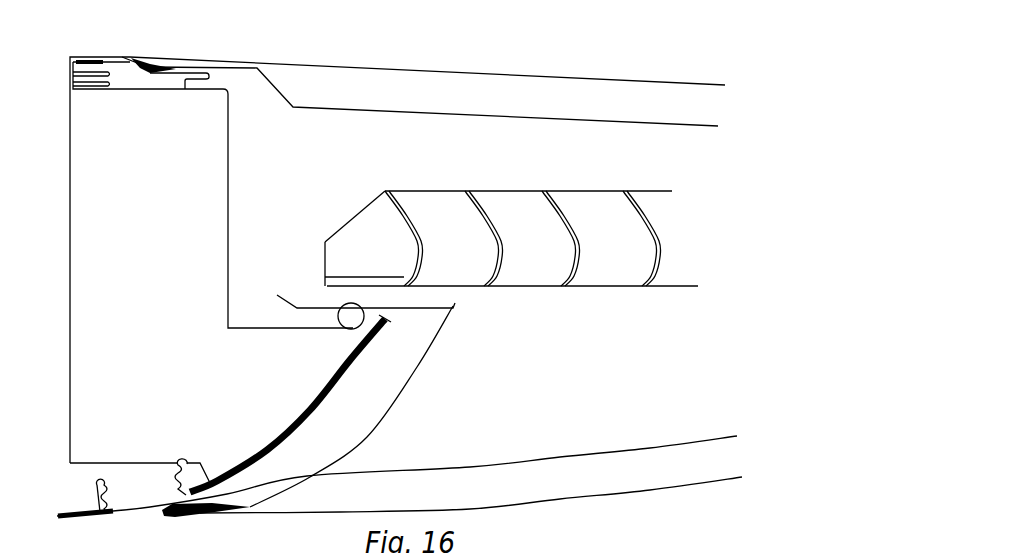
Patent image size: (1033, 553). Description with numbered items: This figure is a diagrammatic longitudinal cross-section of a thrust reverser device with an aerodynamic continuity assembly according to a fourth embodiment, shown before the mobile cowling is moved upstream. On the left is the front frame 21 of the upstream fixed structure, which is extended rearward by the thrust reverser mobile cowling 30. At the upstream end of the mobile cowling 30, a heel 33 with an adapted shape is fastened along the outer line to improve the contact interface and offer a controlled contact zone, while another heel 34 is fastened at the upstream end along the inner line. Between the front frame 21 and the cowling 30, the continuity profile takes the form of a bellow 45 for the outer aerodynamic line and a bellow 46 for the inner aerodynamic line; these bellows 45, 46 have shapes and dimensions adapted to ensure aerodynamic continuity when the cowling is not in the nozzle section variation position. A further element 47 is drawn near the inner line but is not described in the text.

The front frame 21 is at (90, 212).
The thrust reverser mobile cowling 30 is at (517, 90).
The heel 33 is at (147, 60).
The heel 34 is at (186, 517).
The bellow 45 is at (117, 57).
The bellow 46 is at (122, 514).
The seal / comb 47 is at (85, 516).